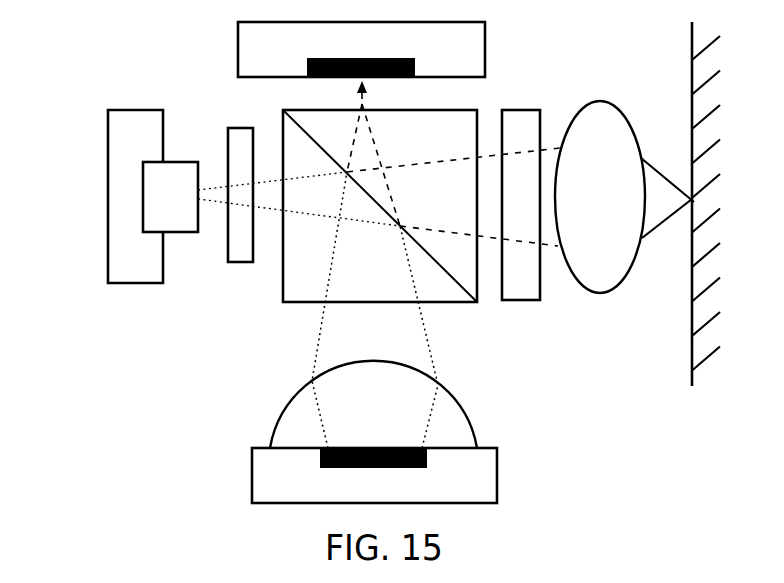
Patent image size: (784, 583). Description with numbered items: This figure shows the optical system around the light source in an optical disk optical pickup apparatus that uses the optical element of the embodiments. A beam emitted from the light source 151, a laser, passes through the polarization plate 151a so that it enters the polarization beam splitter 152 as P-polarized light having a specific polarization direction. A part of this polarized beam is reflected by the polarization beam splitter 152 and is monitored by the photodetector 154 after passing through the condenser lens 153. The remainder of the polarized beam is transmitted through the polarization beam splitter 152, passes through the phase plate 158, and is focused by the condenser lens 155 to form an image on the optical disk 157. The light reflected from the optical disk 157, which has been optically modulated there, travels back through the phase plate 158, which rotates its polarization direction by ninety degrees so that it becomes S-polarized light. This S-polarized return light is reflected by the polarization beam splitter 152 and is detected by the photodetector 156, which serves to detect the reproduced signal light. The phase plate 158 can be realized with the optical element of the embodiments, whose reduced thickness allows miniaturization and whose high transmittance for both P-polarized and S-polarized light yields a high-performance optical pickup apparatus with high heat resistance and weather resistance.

The light source 151 is at (135, 248).
The polarization plate 151a is at (238, 145).
The polarization beam splitter 152 is at (300, 288).
The condenser lens 153 is at (293, 430).
The photodetector 154 is at (265, 473).
The condenser lens 155 is at (597, 283).
The photodetector 156 is at (258, 35).
The optical disk 157 is at (692, 358).
The phase plate 158 is at (522, 288).